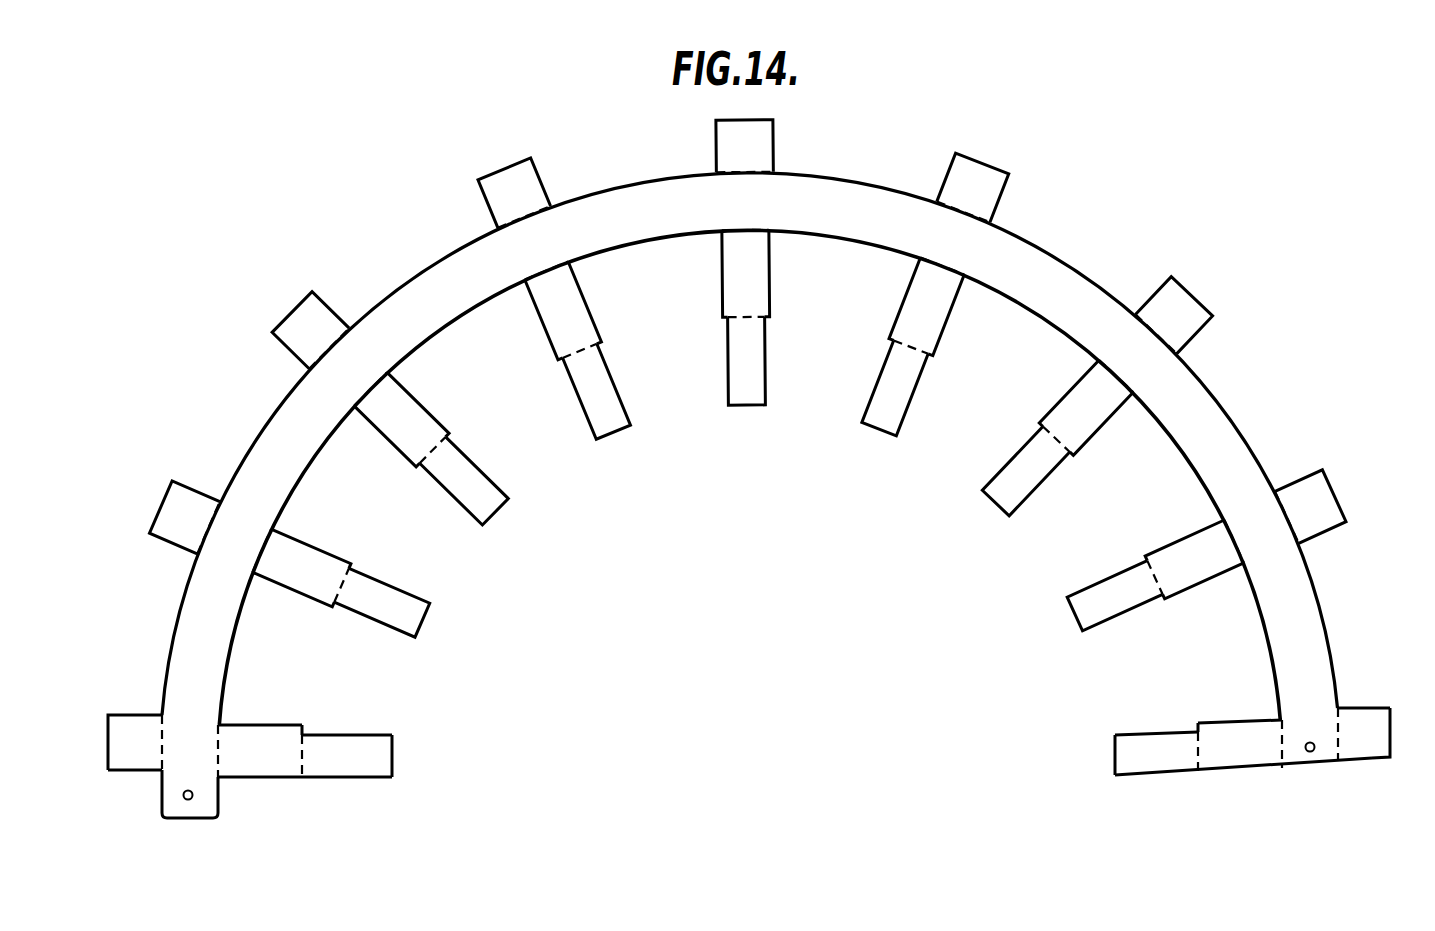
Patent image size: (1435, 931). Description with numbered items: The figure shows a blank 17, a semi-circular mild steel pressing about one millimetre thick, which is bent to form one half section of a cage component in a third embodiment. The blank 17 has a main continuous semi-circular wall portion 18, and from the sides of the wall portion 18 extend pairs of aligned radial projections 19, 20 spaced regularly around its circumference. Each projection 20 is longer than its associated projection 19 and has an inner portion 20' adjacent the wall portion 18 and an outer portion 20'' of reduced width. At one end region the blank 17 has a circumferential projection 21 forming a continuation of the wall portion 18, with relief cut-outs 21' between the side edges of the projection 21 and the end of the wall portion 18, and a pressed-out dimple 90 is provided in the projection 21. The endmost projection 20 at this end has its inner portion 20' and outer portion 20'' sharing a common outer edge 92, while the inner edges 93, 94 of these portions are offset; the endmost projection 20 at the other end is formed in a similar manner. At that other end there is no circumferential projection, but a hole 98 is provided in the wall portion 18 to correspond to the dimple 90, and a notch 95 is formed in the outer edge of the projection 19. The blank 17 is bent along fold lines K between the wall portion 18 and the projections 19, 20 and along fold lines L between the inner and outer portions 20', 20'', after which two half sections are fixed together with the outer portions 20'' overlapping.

The blank 17 is at (749, 494).
The main wall portion 18 is at (459, 305).
The radial projection 19 is at (502, 172).
The radial projection 20 is at (747, 540).
The inner portion 20' is at (747, 484).
The outer portion 20'' is at (748, 547).
The circumferential projection 21 is at (222, 810).
The relief cut-out 21' is at (135, 810).
The pressed-out dimple 90 is at (192, 800).
The common outer edge 92 is at (383, 784).
The inner edge 93 is at (250, 724).
The inner edge 94 is at (362, 735).
The notch 95 is at (1383, 760).
The hole 98 is at (1310, 754).
The fold lines K is at (753, 172).
The fold lines L is at (895, 340).